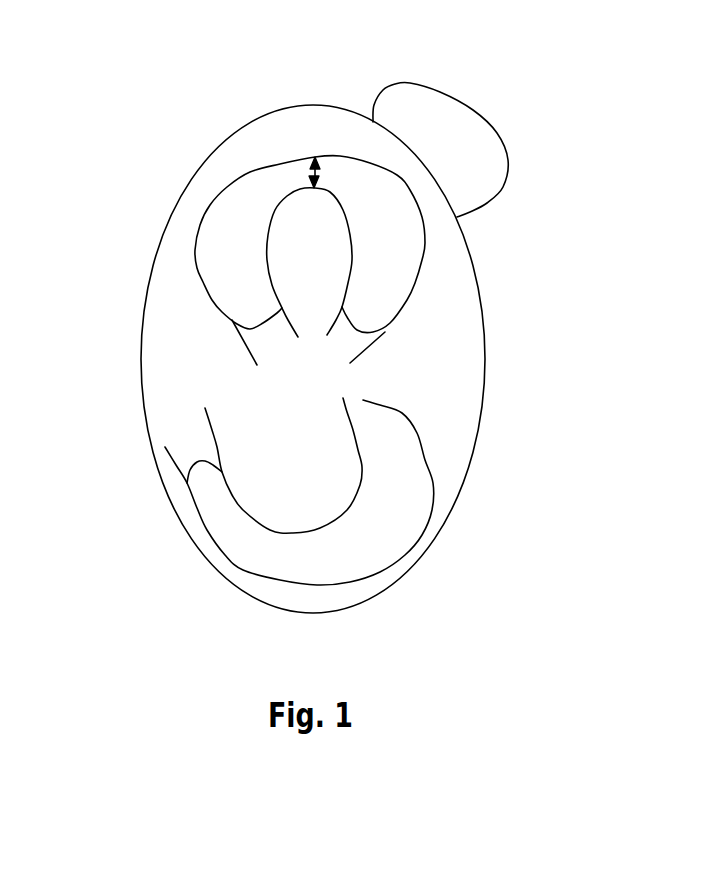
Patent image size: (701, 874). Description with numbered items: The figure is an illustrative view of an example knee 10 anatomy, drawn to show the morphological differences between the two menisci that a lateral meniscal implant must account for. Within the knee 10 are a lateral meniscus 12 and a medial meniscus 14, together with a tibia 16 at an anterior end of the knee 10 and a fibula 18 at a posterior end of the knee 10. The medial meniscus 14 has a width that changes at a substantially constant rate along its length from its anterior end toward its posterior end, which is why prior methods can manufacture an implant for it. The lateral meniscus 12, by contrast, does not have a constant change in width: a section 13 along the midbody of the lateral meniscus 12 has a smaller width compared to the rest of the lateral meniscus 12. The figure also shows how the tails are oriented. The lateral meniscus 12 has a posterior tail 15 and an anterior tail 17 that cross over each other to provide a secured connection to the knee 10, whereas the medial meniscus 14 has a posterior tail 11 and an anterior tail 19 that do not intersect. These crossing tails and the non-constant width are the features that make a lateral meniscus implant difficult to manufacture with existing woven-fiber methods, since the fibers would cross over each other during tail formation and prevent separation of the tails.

The knee 10 is at (120, 34).
The posterior tail 11 is at (358, 386).
The lateral meniscus 12 is at (248, 225).
The section 13 is at (316, 157).
The medial meniscus 14 is at (402, 528).
The posterior tail 15 is at (347, 344).
The tibia 16 is at (152, 333).
The anterior tail 17 is at (263, 345).
The fibula 18 is at (448, 108).
The anterior tail 19 is at (197, 453).